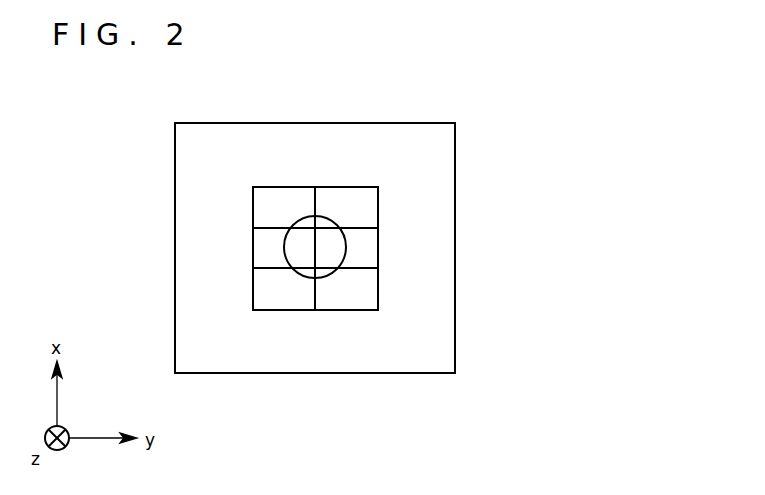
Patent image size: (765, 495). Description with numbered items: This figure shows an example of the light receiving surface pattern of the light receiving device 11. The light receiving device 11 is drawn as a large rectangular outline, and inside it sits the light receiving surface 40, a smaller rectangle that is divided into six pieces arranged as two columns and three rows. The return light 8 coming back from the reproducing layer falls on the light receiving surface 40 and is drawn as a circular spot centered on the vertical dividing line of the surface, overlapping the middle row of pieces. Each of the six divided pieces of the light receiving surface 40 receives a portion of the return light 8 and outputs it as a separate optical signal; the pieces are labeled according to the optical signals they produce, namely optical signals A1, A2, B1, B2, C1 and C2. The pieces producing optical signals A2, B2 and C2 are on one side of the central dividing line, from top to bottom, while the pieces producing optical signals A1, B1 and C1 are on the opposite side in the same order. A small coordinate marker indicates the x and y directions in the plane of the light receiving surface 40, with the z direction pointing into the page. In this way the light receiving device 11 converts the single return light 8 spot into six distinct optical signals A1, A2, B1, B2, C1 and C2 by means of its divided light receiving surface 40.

The return light 8 is at (316, 217).
The light receiving device 11 is at (455, 335).
The light receiving surface 40 is at (285, 311).
The optical signal A1 is at (365, 209).
The optical signal A2 is at (266, 209).
The optical signal B1 is at (365, 249).
The optical signal B2 is at (266, 249).
The optical signal C1 is at (365, 292).
The optical signal C2 is at (266, 292).